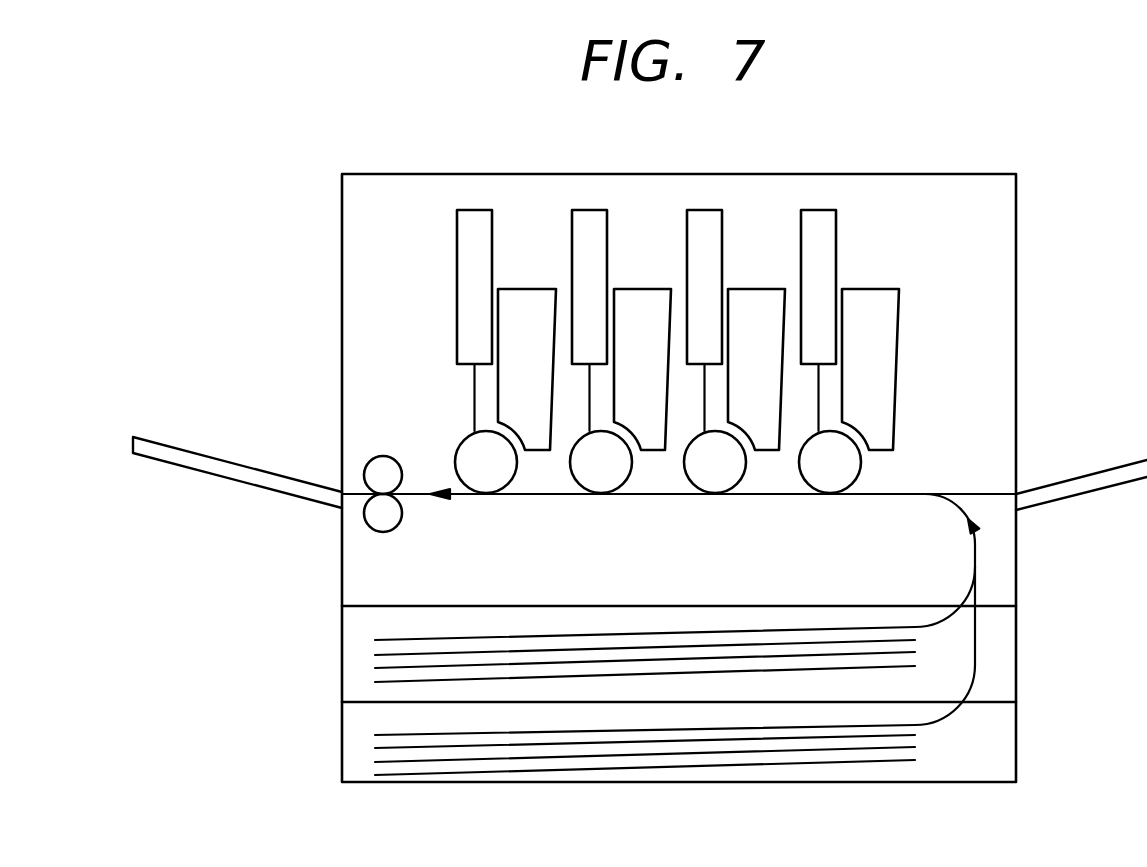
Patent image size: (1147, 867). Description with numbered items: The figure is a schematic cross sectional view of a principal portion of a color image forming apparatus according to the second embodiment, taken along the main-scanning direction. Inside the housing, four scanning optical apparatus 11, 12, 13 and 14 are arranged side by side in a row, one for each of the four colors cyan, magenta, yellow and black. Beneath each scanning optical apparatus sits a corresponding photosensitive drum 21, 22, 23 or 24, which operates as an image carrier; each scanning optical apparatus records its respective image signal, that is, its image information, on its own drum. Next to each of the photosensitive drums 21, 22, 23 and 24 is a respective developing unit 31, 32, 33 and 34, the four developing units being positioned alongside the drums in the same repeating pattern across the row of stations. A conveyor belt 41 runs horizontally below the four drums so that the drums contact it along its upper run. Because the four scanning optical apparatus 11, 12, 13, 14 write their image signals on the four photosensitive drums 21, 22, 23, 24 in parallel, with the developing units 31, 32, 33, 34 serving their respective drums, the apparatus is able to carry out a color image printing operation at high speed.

The scanning optical apparatus 11 is at (492, 238).
The scanning optical apparatus 12 is at (607, 238).
The scanning optical apparatus 13 is at (722, 238).
The scanning optical apparatus 14 is at (836, 238).
The photosensitive drum 21 is at (472, 478).
The photosensitive drum 22 is at (587, 478).
The photosensitive drum 23 is at (701, 478).
The photosensitive drum 24 is at (816, 478).
The developing unit 31 is at (538, 442).
The developing unit 32 is at (653, 442).
The developing unit 33 is at (767, 442).
The developing unit 34 is at (881, 442).
The conveyor belt 41 is at (906, 495).